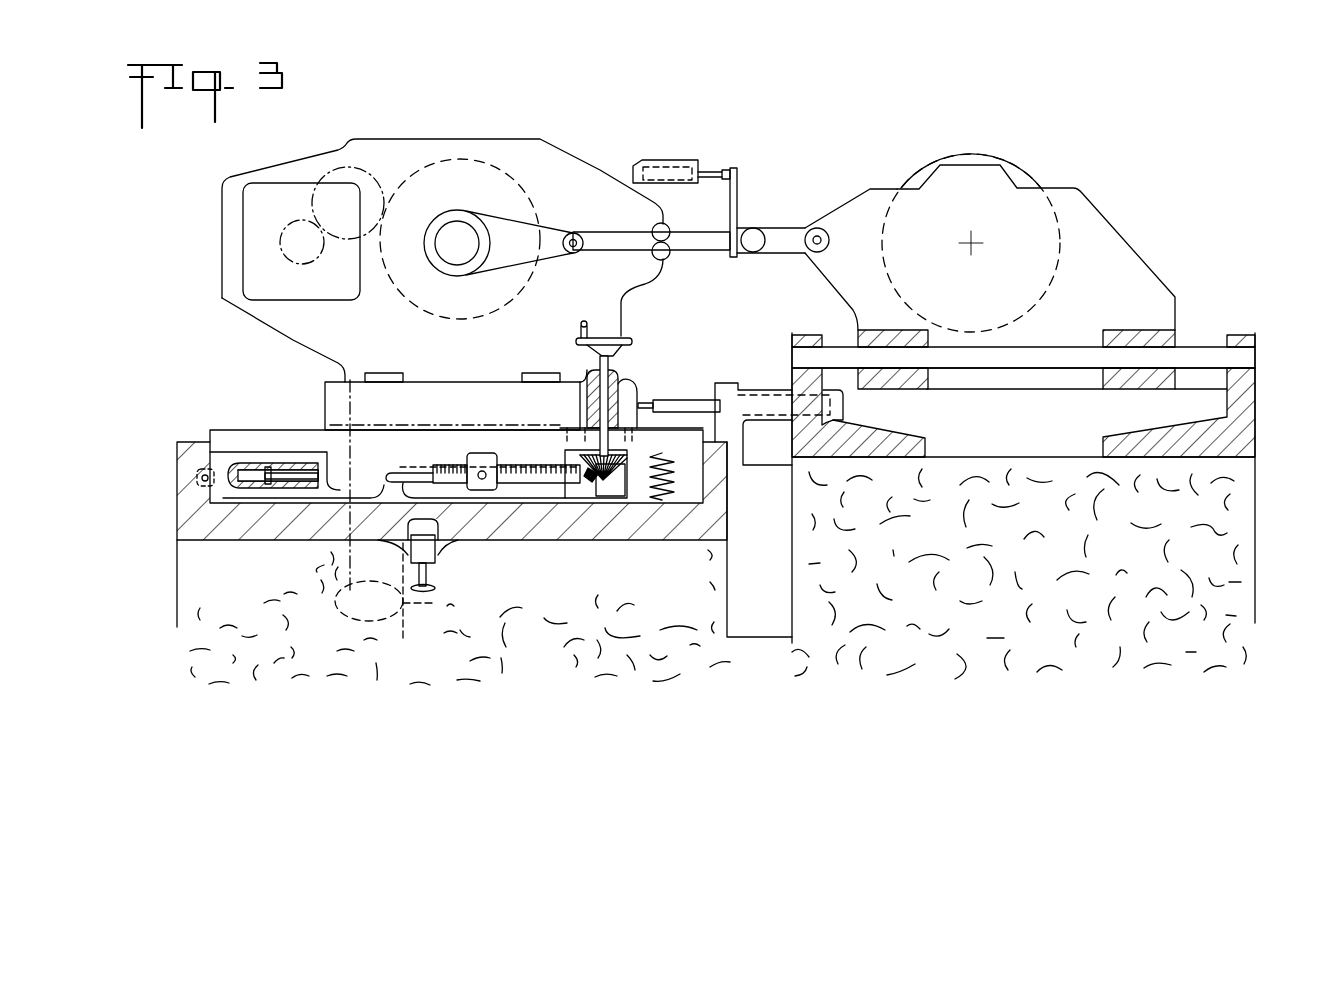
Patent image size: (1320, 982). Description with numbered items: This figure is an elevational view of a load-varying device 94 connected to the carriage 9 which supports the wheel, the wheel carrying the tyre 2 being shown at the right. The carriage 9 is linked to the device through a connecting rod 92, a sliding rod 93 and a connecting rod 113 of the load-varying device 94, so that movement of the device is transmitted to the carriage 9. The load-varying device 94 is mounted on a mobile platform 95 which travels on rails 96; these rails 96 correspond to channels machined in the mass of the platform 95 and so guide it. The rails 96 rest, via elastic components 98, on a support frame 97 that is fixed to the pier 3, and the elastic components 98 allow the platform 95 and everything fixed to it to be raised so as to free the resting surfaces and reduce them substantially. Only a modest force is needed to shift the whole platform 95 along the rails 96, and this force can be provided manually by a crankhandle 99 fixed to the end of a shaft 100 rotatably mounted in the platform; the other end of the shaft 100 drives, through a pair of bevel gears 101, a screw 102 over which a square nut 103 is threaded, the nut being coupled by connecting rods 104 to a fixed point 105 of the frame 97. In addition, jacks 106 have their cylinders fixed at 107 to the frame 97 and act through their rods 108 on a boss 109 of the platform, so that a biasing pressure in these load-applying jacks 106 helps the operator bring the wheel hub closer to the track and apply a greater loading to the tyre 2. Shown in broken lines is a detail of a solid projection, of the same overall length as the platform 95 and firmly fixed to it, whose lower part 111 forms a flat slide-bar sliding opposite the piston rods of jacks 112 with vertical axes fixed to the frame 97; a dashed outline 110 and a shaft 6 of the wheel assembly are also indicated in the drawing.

The tyre 2 is at (1032, 163).
The pier 3 is at (522, 663).
The shaft 6 is at (1037, 375).
The carriage 9 is at (853, 220).
The connecting rod 92 is at (782, 258).
The sliding rod 93 is at (697, 252).
The load-varying device 94 is at (458, 133).
The mobile platform 95 is at (632, 396).
The rails 96 is at (247, 430).
The support frame 97 is at (250, 541).
The elastic components 98 is at (668, 503).
The crankhandle 99 is at (620, 345).
The shaft 100 is at (610, 370).
The bevel gears 101 is at (617, 500).
The screw 102 is at (555, 498).
The square nut 103 is at (487, 497).
The connecting rods 104 is at (432, 446).
The fixed point 105 is at (381, 448).
The jacks 106 is at (223, 500).
The fixing point of jack cylinders 107 is at (201, 479).
The rods 108 is at (297, 493).
The boss 109 is at (332, 468).
The cam 110 is at (351, 598).
The lower part 111 is at (406, 606).
The jacks with vertical axes 112 is at (441, 551).
The connecting rod 113 is at (543, 232).